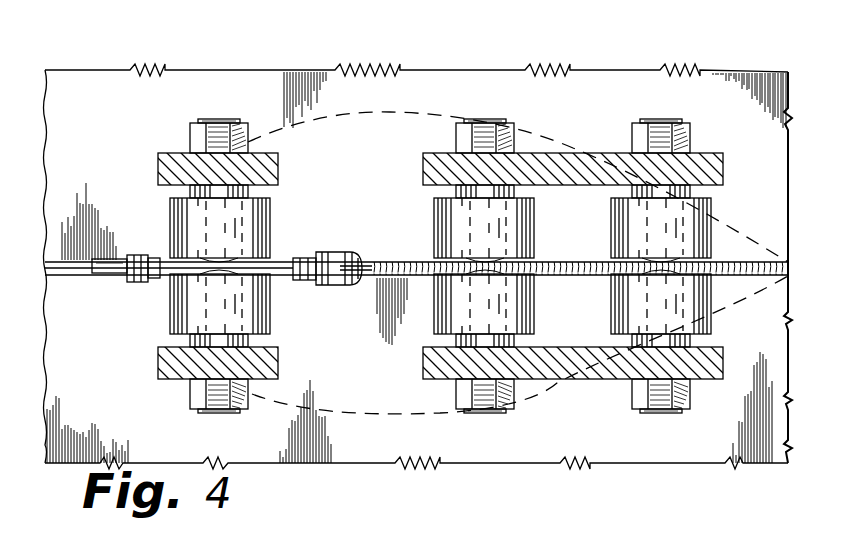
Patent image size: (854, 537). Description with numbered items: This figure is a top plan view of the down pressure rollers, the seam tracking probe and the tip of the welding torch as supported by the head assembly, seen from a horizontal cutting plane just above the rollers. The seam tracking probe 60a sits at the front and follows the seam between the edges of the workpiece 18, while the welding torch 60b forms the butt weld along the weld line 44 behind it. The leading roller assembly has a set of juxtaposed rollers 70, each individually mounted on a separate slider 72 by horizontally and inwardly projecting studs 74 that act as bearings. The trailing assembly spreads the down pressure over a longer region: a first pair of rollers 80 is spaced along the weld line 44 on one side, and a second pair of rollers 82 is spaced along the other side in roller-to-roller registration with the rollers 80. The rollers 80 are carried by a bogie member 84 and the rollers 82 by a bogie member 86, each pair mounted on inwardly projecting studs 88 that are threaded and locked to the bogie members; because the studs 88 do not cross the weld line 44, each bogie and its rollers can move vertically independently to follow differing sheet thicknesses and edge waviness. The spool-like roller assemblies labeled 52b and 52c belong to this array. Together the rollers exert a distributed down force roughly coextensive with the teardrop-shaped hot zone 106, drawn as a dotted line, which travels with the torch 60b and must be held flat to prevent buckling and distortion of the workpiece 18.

The workpiece 18 is at (279, 108).
The weld line 44 is at (66, 262).
The spool assembly 52b is at (222, 206).
The double spool assembly 52c is at (572, 218).
The seam tracking probe 60a is at (142, 282).
The welding torch 60b is at (352, 286).
The rollers 70 is at (170, 203).
The sliders 72 is at (163, 153).
The studs 74 is at (236, 230).
The first pair of rollers 80 is at (435, 330).
The second pair of rollers 82 is at (435, 222).
The bogie member 84 is at (568, 380).
The bogie member 86 is at (591, 153).
The studs 88 is at (495, 218).
The hot zone 106 is at (407, 113).